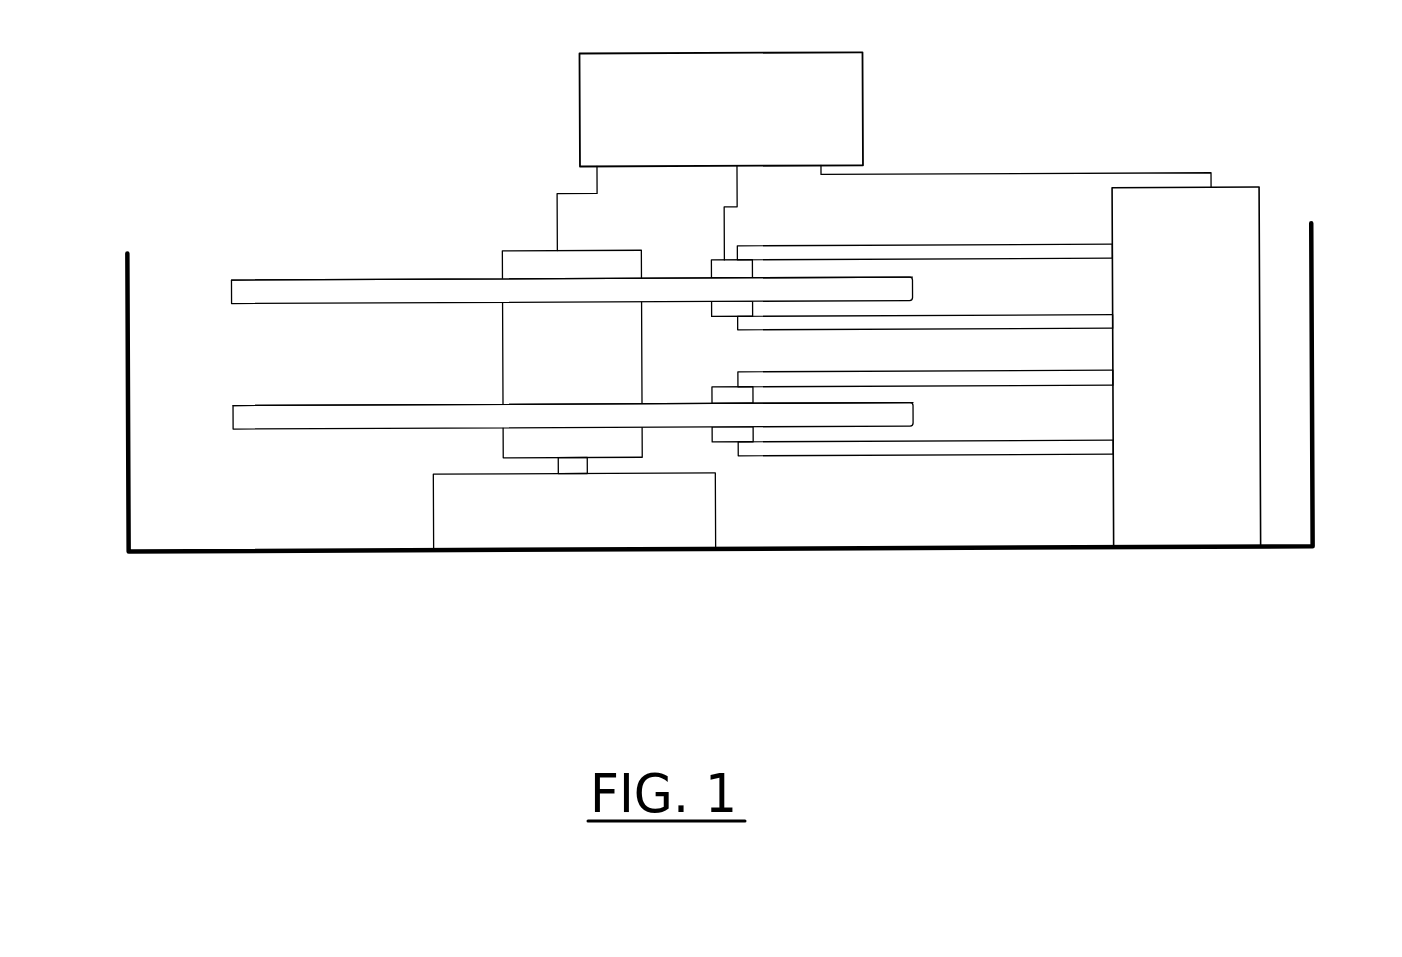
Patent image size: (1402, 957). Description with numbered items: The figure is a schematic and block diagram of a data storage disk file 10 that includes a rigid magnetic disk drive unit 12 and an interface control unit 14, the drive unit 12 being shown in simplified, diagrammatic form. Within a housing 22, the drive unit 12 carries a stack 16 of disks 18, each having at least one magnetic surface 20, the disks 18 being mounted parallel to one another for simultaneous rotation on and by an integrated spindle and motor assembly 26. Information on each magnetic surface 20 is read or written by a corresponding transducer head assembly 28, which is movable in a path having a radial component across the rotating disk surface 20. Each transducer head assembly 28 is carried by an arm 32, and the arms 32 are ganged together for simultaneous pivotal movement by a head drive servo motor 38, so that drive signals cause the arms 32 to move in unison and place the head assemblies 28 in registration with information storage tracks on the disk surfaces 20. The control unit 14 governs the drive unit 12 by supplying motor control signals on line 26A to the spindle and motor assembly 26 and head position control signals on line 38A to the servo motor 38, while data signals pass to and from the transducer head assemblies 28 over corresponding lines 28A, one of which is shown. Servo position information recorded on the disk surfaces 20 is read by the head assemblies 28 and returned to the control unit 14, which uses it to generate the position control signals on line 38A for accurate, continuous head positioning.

The data storage disk file 10 is at (1085, 138).
The rigid magnetic disk drive unit 12 is at (310, 455).
The interface control unit 14 is at (720, 109).
The stack of disks 16 is at (458, 248).
The disk 18 is at (232, 293).
The magnetic surface 20 is at (367, 278).
The housing 22 is at (1312, 452).
The integrated spindle and motor assembly 26 is at (573, 400).
The motor control signal line 26A is at (549, 208).
The transducer head assembly 28 is at (710, 260).
The data signal line 28A is at (713, 213).
The arm 32 is at (848, 246).
The head drive servo motor 38 is at (1186, 367).
The head position control signal line 38A is at (1016, 166).